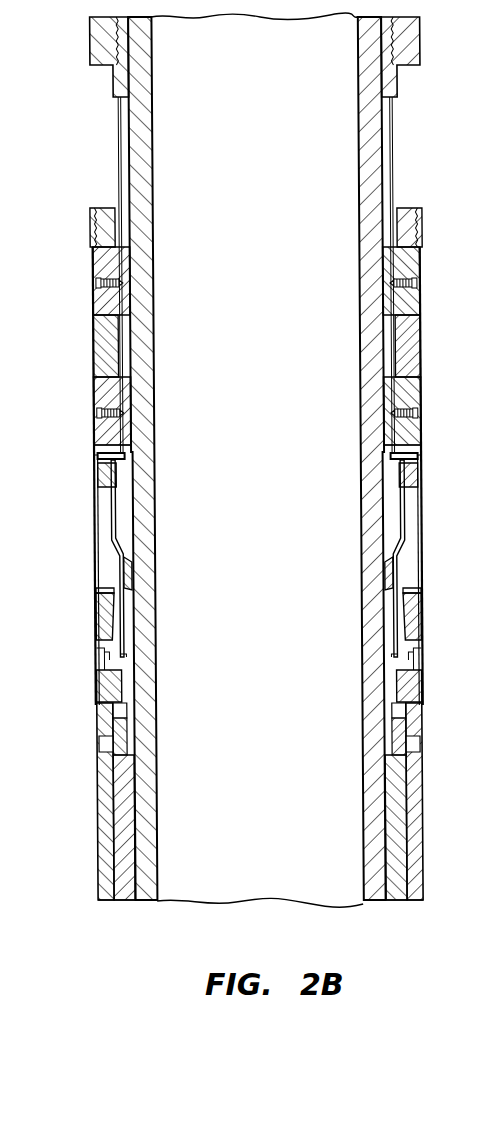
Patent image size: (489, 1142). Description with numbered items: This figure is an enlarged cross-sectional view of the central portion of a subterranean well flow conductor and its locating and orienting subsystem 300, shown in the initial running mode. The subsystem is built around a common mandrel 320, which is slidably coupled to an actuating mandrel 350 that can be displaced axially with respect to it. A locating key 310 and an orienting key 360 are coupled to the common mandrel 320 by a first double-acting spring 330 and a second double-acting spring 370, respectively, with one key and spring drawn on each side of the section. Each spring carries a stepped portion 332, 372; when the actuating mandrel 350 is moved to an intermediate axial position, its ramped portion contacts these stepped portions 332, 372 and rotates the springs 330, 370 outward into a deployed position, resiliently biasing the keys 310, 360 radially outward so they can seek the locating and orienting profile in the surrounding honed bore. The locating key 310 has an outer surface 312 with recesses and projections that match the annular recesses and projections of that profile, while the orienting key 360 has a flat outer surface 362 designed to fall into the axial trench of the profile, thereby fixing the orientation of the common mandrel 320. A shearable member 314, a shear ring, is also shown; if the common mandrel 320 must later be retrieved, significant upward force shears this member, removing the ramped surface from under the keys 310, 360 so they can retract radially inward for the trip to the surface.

The locating and orienting subsystem 300 is at (77, 284).
The actuating mandrel 350 is at (115, 128).
The common mandrel 320 is at (96, 472).
The first double-acting spring 330 is at (110, 524).
The stepped portion 332 is at (112, 549).
The shearable member 314 is at (94, 604).
The locating key 310 is at (96, 618).
The outer surface 312 is at (96, 664).
The second double-acting spring 370 is at (404, 510).
The stepped portion 372 is at (404, 553).
The orienting key 360 is at (422, 620).
The flat outer surface 362 is at (426, 670).